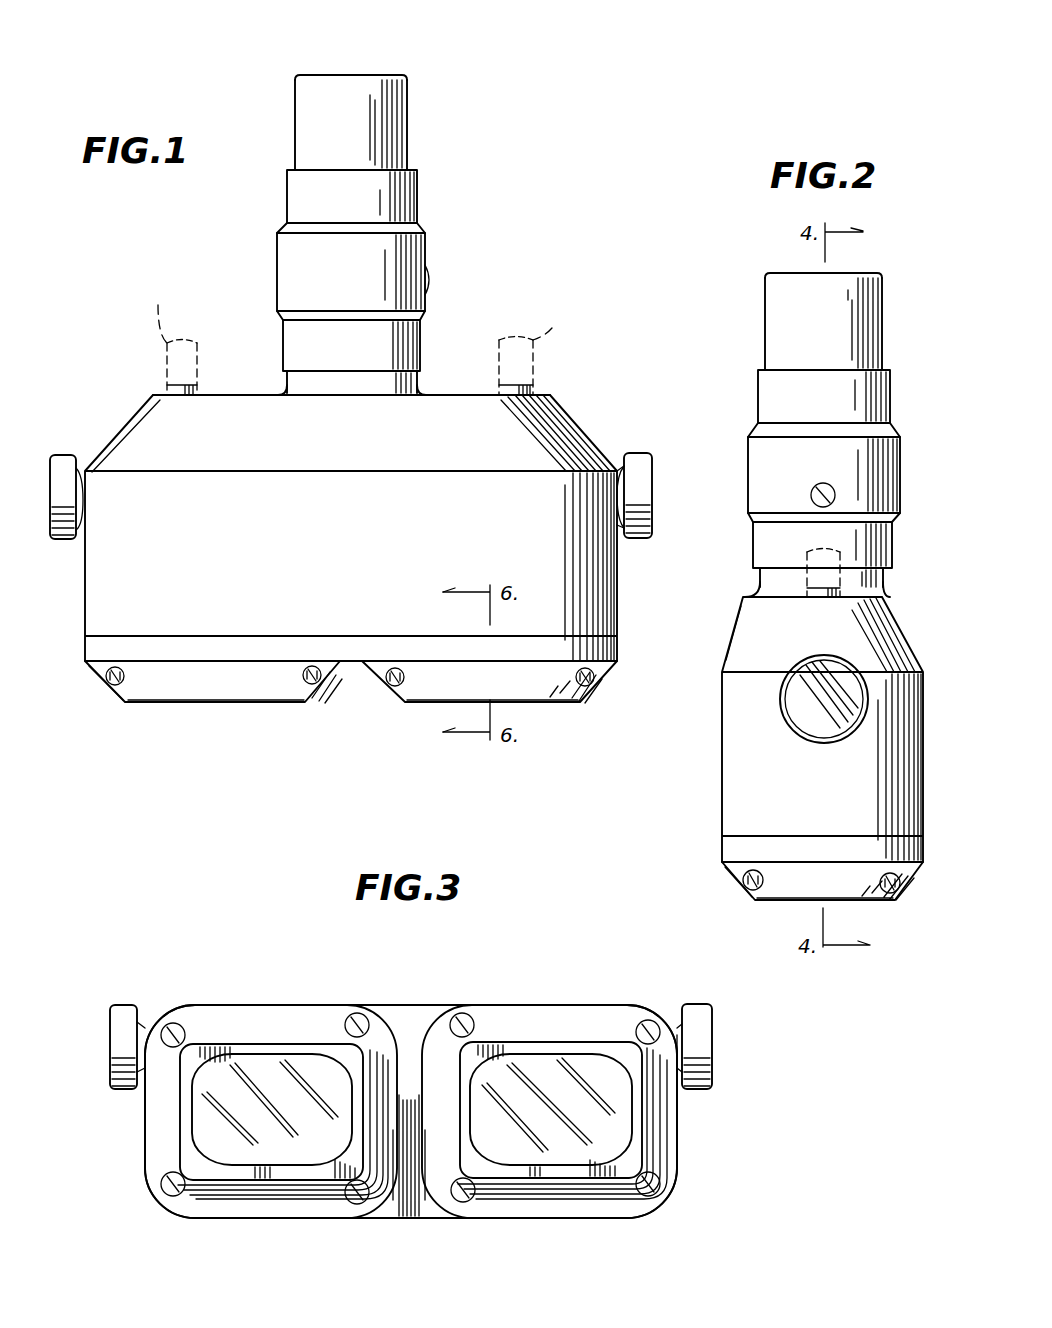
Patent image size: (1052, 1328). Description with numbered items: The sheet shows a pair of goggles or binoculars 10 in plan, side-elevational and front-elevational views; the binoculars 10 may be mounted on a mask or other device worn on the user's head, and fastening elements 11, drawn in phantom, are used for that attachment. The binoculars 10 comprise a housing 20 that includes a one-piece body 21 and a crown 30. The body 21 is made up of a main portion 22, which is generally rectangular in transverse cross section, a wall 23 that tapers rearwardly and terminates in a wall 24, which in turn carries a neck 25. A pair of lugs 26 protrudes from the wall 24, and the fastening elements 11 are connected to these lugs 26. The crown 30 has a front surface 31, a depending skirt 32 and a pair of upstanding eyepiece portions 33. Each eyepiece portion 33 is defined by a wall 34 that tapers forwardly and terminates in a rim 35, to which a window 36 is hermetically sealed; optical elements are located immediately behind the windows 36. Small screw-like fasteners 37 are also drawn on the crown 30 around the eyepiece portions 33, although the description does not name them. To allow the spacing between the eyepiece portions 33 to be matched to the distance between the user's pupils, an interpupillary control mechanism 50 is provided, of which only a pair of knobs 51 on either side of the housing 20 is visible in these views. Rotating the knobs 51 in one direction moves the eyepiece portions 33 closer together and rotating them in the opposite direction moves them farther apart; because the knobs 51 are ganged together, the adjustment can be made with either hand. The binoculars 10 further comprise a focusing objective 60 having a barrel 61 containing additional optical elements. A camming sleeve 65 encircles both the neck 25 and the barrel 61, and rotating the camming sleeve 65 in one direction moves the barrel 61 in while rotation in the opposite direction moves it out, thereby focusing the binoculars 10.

In FIG. 1, the binoculars 10 is at (628, 150).
In FIG. 2, the binoculars 10 is at (912, 920).
In FIG. 3, the binoculars 10 is at (622, 1235).
In FIG. 1, the fastening elements 11 is at (361, 311).
In FIG. 1, the housing 20 is at (600, 425).
In FIG. 2, the housing 20 is at (928, 628).
In FIG. 1, the one-piece body 21 is at (567, 420).
In FIG. 2, the one-piece body 21 is at (927, 700).
In FIG. 1, the main portion 22 is at (605, 590).
In FIG. 2, the main portion 22 is at (912, 803).
In FIG. 1, the wall 23 is at (592, 460).
In FIG. 2, the wall 23 is at (740, 652).
In FIG. 1, the wall 24 is at (466, 395).
In FIG. 1, the neck 25 is at (417, 390).
In FIG. 2, the neck 25 is at (885, 585).
In FIG. 1, the lugs 26 is at (198, 392).
In FIG. 2, the lugs 26 is at (765, 594).
In FIG. 1, the crown 30 is at (592, 684).
In FIG. 2, the crown 30 is at (722, 852).
In FIG. 3, the crown 30 is at (513, 1003).
In FIG. 1, the front surface 31 is at (350, 672).
In FIG. 3, the front surface 31 is at (413, 1020).
In FIG. 1, the depending skirt 32 is at (87, 652).
In FIG. 2, the depending skirt 32 is at (728, 866).
In FIG. 1, the eyepiece portions 33 is at (240, 702).
In FIG. 3, the eyepiece portions 33 is at (433, 1200).
In FIG. 2, the wall 34 is at (790, 893).
In FIG. 3, the wall 34 is at (267, 1022).
In FIG. 3, the rim 35 is at (193, 1057).
In FIG. 3, the window 36 is at (203, 1112).
In FIG. 1, the screw 37 is at (310, 686).
In FIG. 2, the screw 37 is at (745, 887).
In FIG. 3, the screw 37 is at (358, 1027).
In FIG. 1, the interpupillary control mechanism 50 is at (658, 490).
In FIG. 3, the interpupillary control mechanism 50 is at (716, 1004).
In FIG. 1, the knobs 51 is at (62, 455).
In FIG. 2, the knobs 51 is at (782, 702).
In FIG. 3, the knobs 51 is at (120, 1008).
In FIG. 1, the focusing objective 60 is at (410, 76).
In FIG. 2, the focusing objective 60 is at (884, 283).
In FIG. 1, the barrel 61 is at (395, 130).
In FIG. 2, the barrel 61 is at (878, 332).
In FIG. 1, the camming sleeve 65 is at (353, 270).
In FIG. 2, the camming sleeve 65 is at (890, 468).